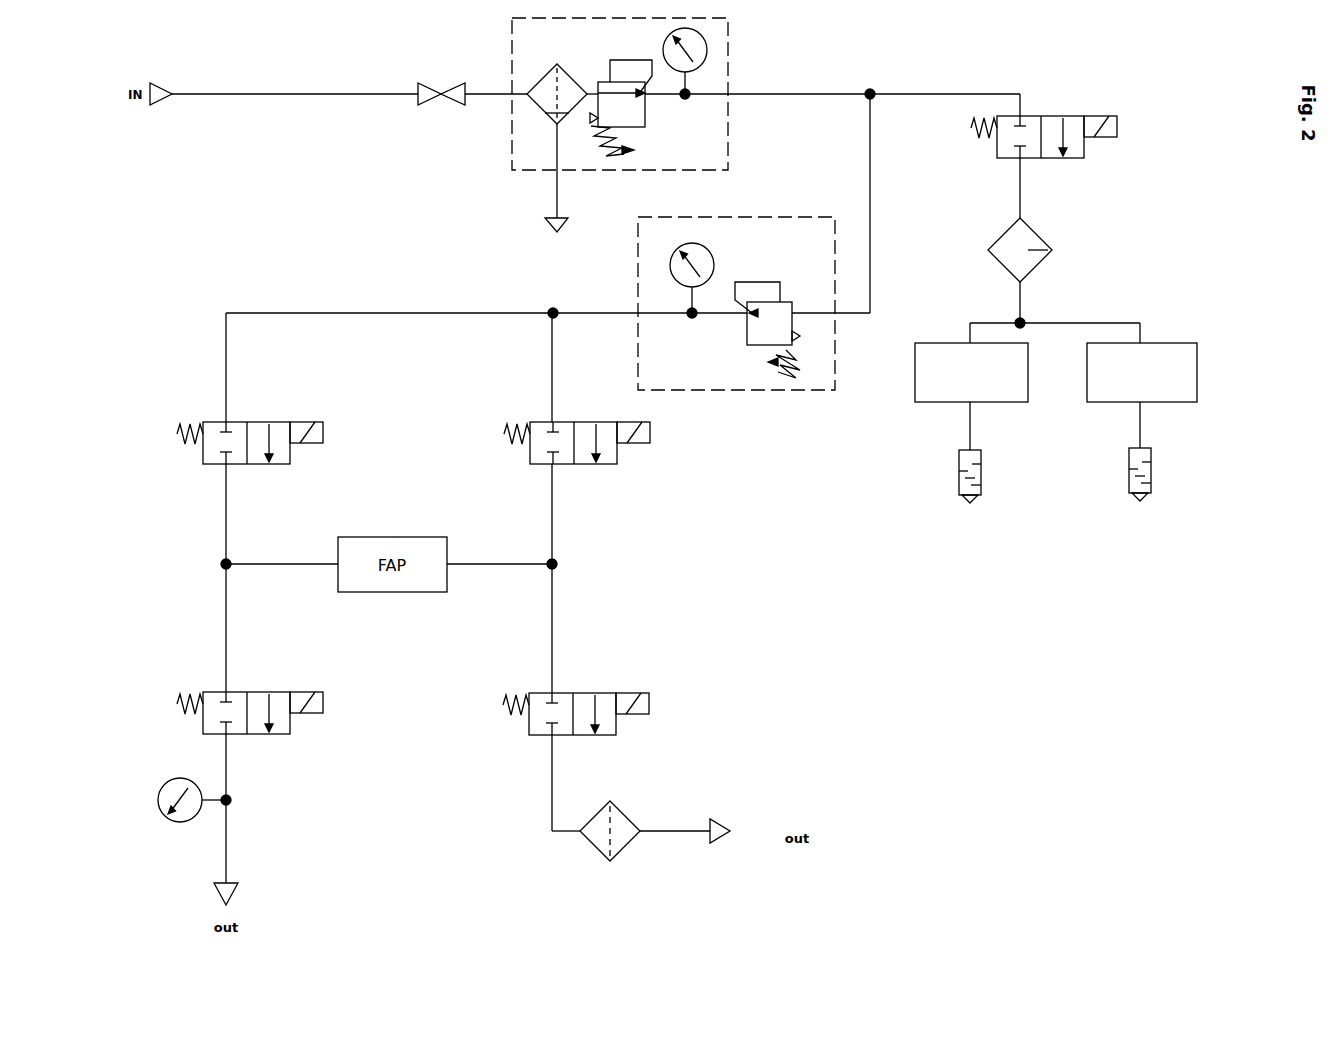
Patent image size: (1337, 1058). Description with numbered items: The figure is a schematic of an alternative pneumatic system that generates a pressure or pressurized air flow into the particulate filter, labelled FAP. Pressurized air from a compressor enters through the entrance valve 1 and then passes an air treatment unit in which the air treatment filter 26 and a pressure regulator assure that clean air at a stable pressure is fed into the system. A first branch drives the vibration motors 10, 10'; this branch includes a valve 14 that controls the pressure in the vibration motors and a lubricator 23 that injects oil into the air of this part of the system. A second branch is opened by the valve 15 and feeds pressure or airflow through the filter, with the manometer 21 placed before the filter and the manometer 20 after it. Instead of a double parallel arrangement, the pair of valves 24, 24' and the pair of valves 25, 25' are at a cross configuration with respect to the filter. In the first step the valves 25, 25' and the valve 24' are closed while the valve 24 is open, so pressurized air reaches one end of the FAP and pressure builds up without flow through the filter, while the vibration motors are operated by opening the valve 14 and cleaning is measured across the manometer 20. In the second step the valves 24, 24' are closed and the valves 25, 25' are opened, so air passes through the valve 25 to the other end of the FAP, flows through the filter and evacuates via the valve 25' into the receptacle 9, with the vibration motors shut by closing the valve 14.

The entrance valve 1 is at (441, 109).
The air treatment filter 26 is at (691, 135).
The manometer before filter 21 is at (677, 272).
The opening valve PF branch 15 is at (736, 303).
The valve 14 is at (1053, 149).
The lubricator 23 is at (1036, 250).
The vibration motor 10 is at (971, 448).
The vibration motor 10' is at (1142, 446).
The valve to control the orientation and pressure over the filter 25 is at (250, 425).
The valve to control the orientation and pressure over the filter 24 is at (579, 454).
The valve to control the orientation and pressure over the filter 24' is at (250, 695).
The valve to control the orientation and pressure over the filter 25' is at (578, 696).
The manometer after filter 20 is at (214, 800).
The particle receptacle 9 is at (616, 825).